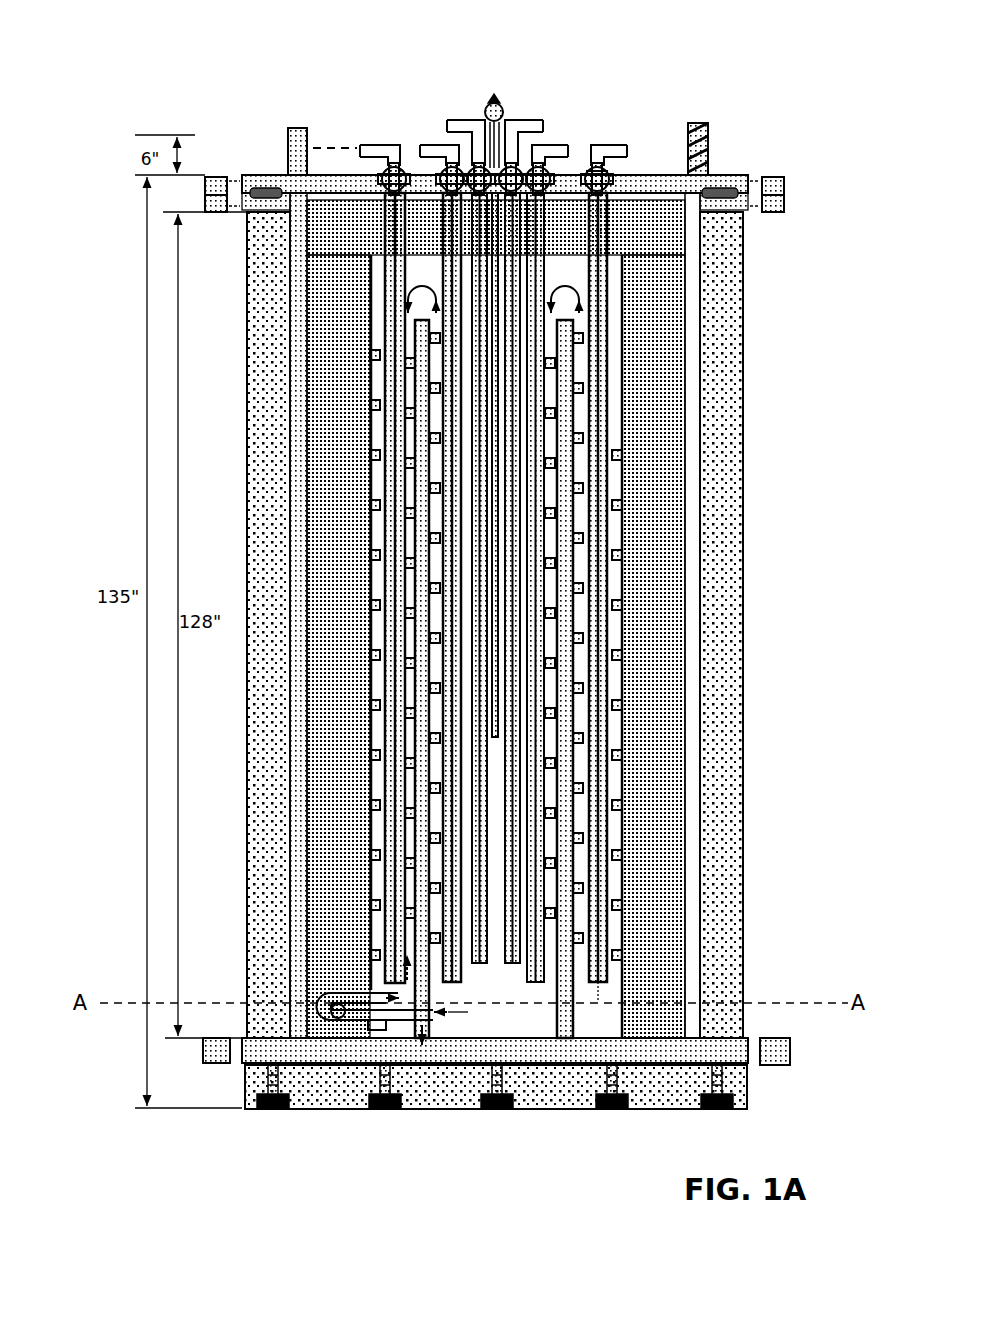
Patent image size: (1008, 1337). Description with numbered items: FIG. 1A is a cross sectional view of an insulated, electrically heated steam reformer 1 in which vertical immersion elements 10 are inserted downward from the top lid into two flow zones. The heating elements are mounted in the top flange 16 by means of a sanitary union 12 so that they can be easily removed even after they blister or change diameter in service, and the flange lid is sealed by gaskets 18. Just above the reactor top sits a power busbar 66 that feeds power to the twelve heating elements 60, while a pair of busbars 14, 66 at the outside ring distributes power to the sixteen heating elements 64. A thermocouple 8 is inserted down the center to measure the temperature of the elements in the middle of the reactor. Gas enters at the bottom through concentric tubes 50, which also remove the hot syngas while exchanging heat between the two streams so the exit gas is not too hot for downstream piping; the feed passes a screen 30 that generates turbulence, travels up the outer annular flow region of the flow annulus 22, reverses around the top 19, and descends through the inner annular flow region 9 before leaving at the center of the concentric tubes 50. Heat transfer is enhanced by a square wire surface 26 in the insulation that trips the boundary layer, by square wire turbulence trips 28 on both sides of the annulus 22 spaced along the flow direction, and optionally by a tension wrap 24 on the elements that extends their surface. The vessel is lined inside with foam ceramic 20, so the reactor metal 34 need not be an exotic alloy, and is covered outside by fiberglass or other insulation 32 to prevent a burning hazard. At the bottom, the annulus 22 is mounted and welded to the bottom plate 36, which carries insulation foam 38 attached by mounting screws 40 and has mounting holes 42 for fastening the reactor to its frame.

The electrically heated steam reformer 1 is at (547, 52).
The thermocouple 8 is at (484, 90).
The inner annular flow region 9 is at (531, 795).
The vertical immersion elements 10 is at (556, 146).
The sanitary union 12 is at (602, 170).
The busbar 14 is at (712, 151).
The top flange 16 is at (786, 182).
The gaskets 18 is at (808, 222).
The top 19 is at (409, 305).
The foam ceramic 20 is at (655, 318).
The flow annulus 22 is at (575, 556).
The tension wrap 24 is at (607, 640).
The square wire surface 26 is at (621, 750).
The square wire turbulence trips 28 is at (579, 880).
The screen 30 is at (592, 1002).
The insulation 32 is at (722, 976).
The reactor metal 34 is at (700, 1020).
The bottom plate 36 is at (392, 1080).
The insulation foam 38 is at (273, 1030).
The mounting screws 40 is at (462, 1098).
The mounting holes 42 is at (230, 1056).
The concentric tubes 50 is at (325, 1006).
The heating elements 60 is at (450, 458).
The heating elements 64 is at (397, 570).
The power busbar 66 is at (289, 152).